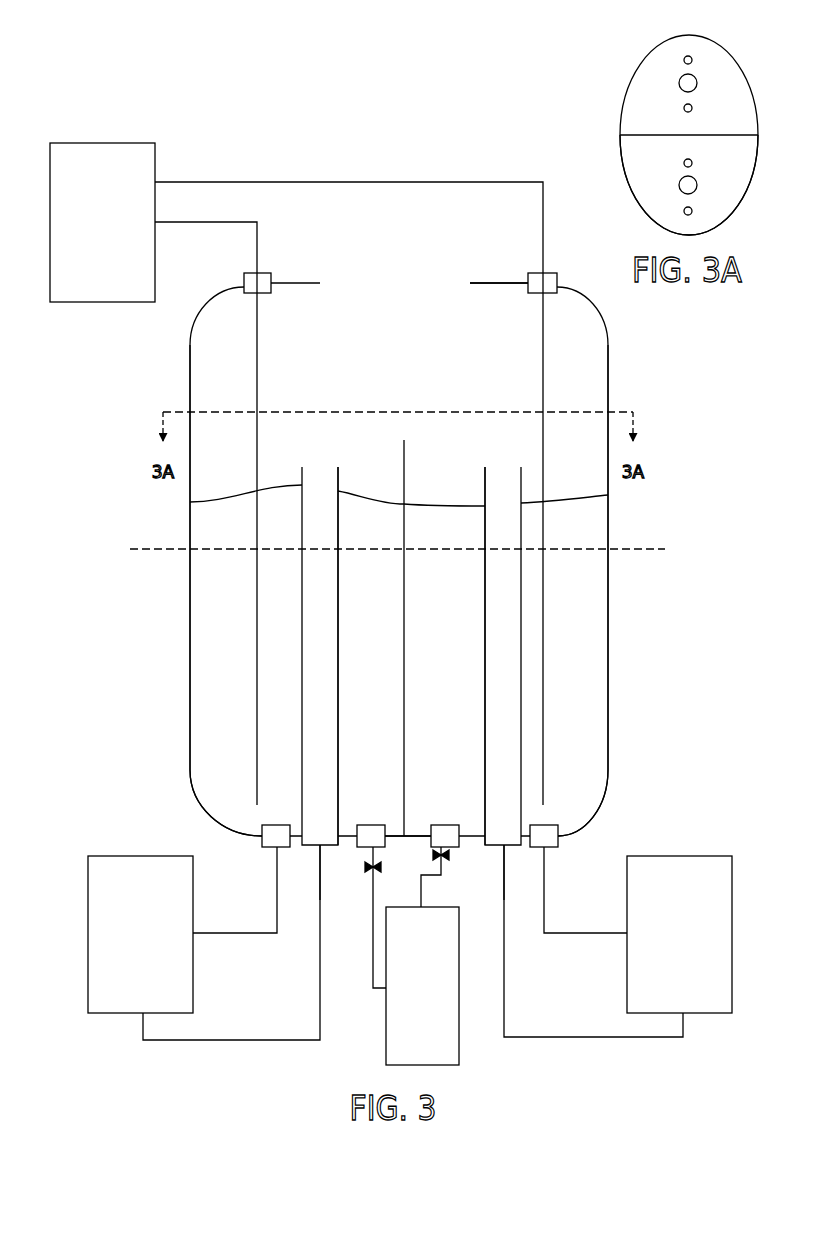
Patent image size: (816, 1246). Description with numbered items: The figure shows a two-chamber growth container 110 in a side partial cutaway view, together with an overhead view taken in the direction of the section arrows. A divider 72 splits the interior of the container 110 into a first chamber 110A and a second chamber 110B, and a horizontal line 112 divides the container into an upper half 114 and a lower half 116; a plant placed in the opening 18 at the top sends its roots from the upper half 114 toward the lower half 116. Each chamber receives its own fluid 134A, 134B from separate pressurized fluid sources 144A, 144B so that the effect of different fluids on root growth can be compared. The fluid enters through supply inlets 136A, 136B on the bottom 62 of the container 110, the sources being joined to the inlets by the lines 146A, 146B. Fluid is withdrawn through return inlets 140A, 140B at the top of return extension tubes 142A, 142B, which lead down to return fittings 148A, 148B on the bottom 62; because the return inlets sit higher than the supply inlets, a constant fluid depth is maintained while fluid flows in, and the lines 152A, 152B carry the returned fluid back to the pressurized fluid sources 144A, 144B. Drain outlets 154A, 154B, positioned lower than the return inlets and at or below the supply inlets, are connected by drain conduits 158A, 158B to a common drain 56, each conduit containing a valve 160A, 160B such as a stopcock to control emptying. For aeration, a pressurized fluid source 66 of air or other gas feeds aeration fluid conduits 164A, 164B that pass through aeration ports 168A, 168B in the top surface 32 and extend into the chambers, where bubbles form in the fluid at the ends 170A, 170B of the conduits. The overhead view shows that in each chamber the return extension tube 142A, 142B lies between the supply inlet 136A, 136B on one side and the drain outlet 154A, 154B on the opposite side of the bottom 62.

In FIG. 3, the opening 18 is at (436, 278).
In FIG. 3, the top surface 32 is at (495, 284).
In FIG. 3, the drain 56 is at (386, 1032).
In FIG. 3, the bottom 62 is at (414, 834).
In FIG. 3, the pressurized fluid source 66 is at (100, 143).
In FIG. 3, the divider 72 is at (405, 456).
In FIG. 3A, the divider 72 is at (625, 135).
In FIG. 3, the two-chamber growth container 110 is at (387, 356).
In FIG. 3, the first chamber 110A is at (160, 645).
In FIG. 3A, the first chamber 110A is at (643, 57).
In FIG. 3, the second chamber 110B is at (644, 646).
In FIG. 3A, the second chamber 110B is at (616, 161).
In FIG. 3, the line 112 is at (152, 546).
In FIG. 3, the upper half 114 is at (110, 449).
In FIG. 3, the lower half 116 is at (110, 600).
In FIG. 3, the fluid 134A is at (235, 493).
In FIG. 3, the fluid 134B is at (568, 498).
In FIG. 3, the supply inlet 136A is at (276, 825).
In FIG. 3A, the supply inlet 136A is at (692, 57).
In FIG. 3, the supply inlet 136B is at (558, 836).
In FIG. 3A, the supply inlet 136B is at (692, 213).
In FIG. 3, the return inlet 140A is at (318, 477).
In FIG. 3A, the return inlet 140A is at (697, 85).
In FIG. 3, the return inlet 140B is at (504, 473).
In FIG. 3A, the return inlet 140B is at (697, 186).
In FIG. 3, the return extension tube 142A is at (338, 637).
In FIG. 3, the return extension tube 142B is at (485, 657).
In FIG. 3, the pressurized fluid source 144A is at (143, 856).
In FIG. 3, the pressurized fluid source 144B is at (683, 856).
In FIG. 3, the first supply line 146A is at (237, 933).
In FIG. 3, the second supply line 146B is at (544, 887).
In FIG. 3, the return fitting 148A is at (320, 848).
In FIG. 3, the return fitting 148B is at (504, 848).
In FIG. 3, the first return line 152A is at (240, 1040).
In FIG. 3, the second return line 152B is at (578, 1037).
In FIG. 3, the drain outlet 154A is at (373, 825).
In FIG. 3A, the drain outlet 154A is at (692, 109).
In FIG. 3, the drain outlet 154B is at (443, 825).
In FIG. 3A, the drain outlet 154B is at (692, 162).
In FIG. 3, the drain conduit 158A is at (373, 955).
In FIG. 3, the drain conduit 158B is at (421, 888).
In FIG. 3, the valve 160A is at (365, 870).
In FIG. 3, the valve 160B is at (448, 860).
In FIG. 3, the aeration fluid conduit 164A is at (205, 223).
In FIG. 3, the aeration fluid conduit 164B is at (255, 181).
In FIG. 3, the aeration port 168A is at (262, 273).
In FIG. 3, the aeration port 168B is at (548, 273).
In FIG. 3, the end of aeration fluid conduit 170A is at (257, 803).
In FIG. 3, the end of aeration fluid conduit 170B is at (544, 805).